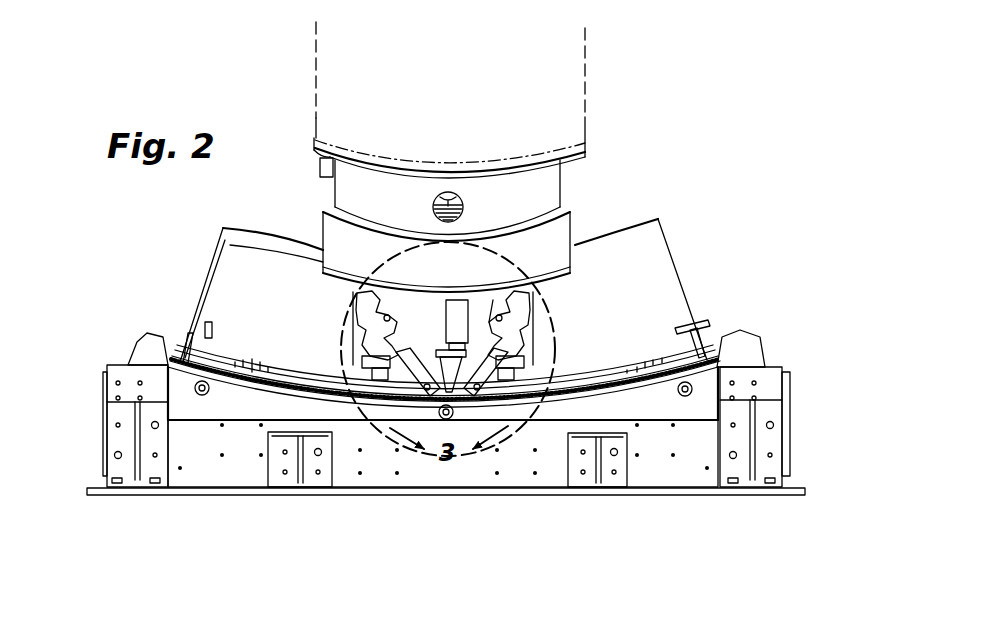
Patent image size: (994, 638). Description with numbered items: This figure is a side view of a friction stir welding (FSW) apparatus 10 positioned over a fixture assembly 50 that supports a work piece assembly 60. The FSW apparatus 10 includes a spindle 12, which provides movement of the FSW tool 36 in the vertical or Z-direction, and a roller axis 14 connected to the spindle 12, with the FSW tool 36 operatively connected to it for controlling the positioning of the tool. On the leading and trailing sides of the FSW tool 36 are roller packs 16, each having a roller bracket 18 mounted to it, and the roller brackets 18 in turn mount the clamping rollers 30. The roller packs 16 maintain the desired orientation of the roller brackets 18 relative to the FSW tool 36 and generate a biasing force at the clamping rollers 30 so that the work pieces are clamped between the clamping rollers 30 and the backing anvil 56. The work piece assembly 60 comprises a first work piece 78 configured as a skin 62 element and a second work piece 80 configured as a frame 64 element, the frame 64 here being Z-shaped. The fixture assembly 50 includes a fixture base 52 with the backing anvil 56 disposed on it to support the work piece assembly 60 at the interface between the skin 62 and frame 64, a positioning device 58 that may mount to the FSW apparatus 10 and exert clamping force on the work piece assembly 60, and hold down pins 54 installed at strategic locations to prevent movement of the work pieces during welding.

The friction stir welding apparatus 10 is at (667, 57).
The spindle 12 is at (585, 93).
The roller axis 14 is at (573, 258).
The roller pack 16 is at (413, 383).
The roller bracket 18 is at (430, 397).
The clamping roller 30 is at (441, 395).
The FSW tool 36 is at (453, 395).
The fixture assembly 50 is at (778, 353).
The fixture base 52 is at (795, 493).
The hold down pin 54 is at (207, 325).
The backing anvil 56 is at (650, 410).
The positioning device 58 is at (537, 327).
The work piece assembly 60 is at (212, 248).
The skin 62 is at (264, 292).
The first work piece 78 is at (292, 292).
The frame 64 is at (177, 346).
The second work piece 80 is at (399, 367).